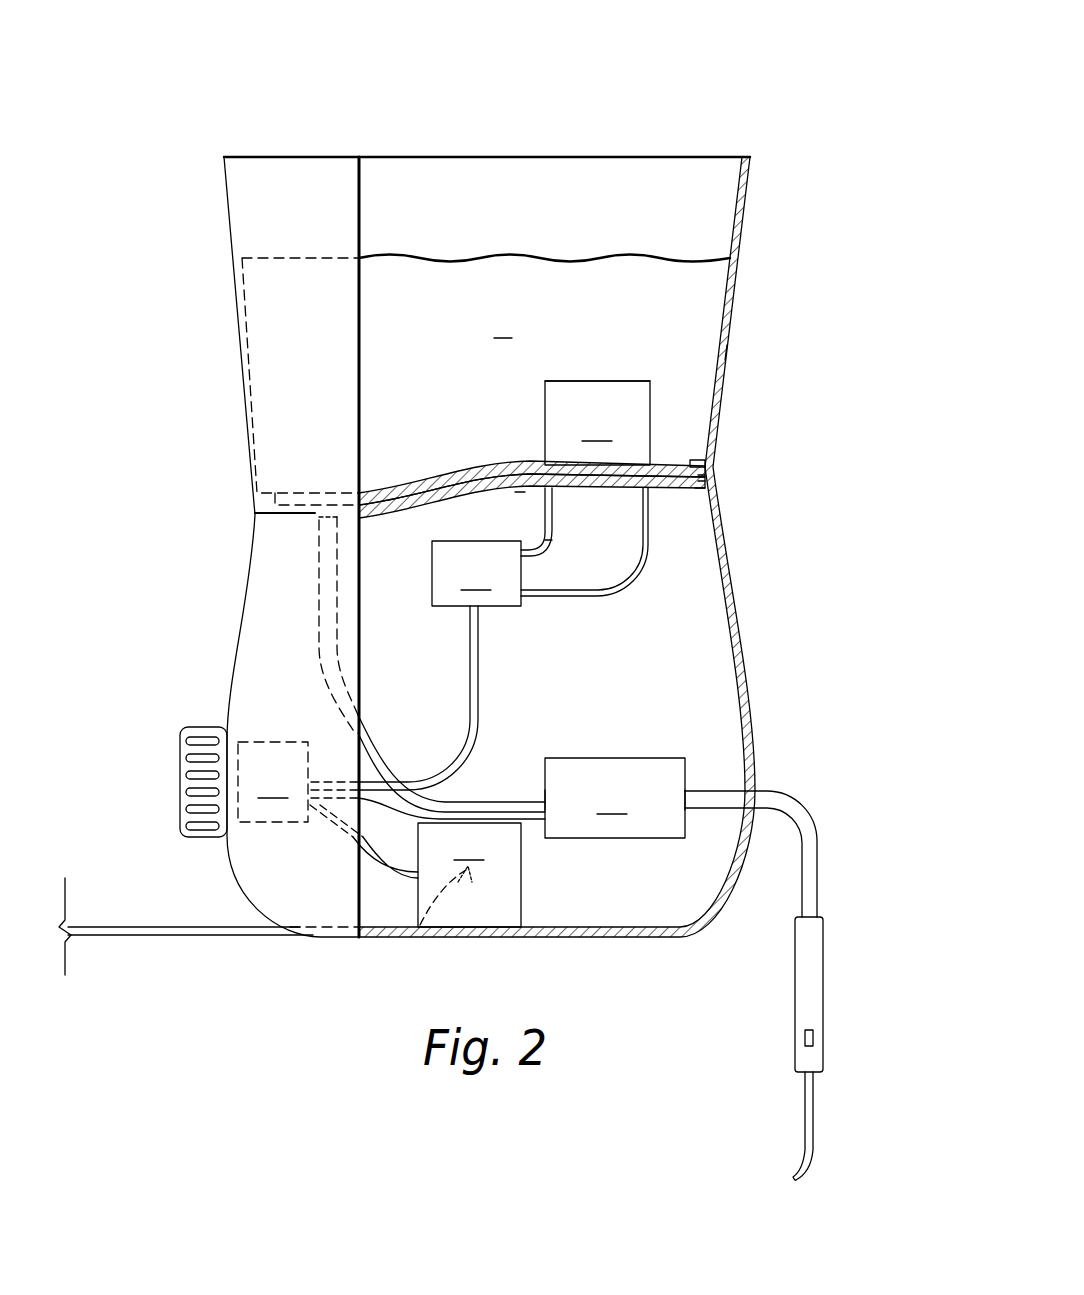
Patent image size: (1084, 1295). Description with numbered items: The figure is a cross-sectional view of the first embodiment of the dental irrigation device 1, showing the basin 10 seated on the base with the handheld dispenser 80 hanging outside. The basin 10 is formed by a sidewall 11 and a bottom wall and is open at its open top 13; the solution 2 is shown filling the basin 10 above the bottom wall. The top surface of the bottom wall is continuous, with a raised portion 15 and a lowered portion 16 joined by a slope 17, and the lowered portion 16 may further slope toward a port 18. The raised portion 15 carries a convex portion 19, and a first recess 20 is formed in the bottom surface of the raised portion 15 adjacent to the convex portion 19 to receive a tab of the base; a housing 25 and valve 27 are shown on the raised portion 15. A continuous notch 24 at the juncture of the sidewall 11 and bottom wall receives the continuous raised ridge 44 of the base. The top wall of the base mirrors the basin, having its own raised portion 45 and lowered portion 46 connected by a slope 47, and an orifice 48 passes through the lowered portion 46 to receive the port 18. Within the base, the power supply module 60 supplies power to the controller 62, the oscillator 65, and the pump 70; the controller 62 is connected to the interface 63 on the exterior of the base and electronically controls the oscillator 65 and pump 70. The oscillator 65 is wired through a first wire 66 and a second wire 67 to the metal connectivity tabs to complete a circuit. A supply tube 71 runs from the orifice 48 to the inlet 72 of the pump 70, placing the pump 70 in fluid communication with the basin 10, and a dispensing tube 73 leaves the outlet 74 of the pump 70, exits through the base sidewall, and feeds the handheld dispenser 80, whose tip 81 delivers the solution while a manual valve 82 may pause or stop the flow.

The dental irrigation device 1 is at (662, 87).
The fluid 2 is at (544, 297).
The basin 10 is at (740, 237).
The sidewall 11 is at (727, 352).
The open top 13 is at (478, 155).
The raised portion 15 is at (703, 481).
The lowered portion 16 is at (283, 497).
The slope 17 is at (550, 490).
The port 18 is at (328, 503).
The convex portion 19 is at (550, 463).
The first recess 20 is at (545, 463).
The continuous notch 24 is at (705, 467).
The valve housing 25 is at (610, 381).
The valve 27 is at (597, 423).
The raised ridge 44 is at (703, 477).
The raised portion 45 is at (700, 488).
The lowered portion 46 is at (285, 522).
The slope 47 is at (520, 497).
The orifice 48 is at (325, 520).
The power supply module 60 is at (437, 875).
The controller 62 is at (391, 789).
The interface 63 is at (180, 778).
The oscillator 65 is at (439, 665).
The first wire 66 is at (548, 545).
The second wire 67 is at (648, 533).
The pump 70 is at (615, 798).
The supply tube 71 is at (320, 589).
The inlet 72 is at (545, 798).
The dispensing tube 73 is at (818, 870).
The outlet 74 is at (685, 800).
The handheld dispenser 80 is at (823, 994).
The tip 81 is at (808, 1155).
The manual valve 82 is at (813, 1037).